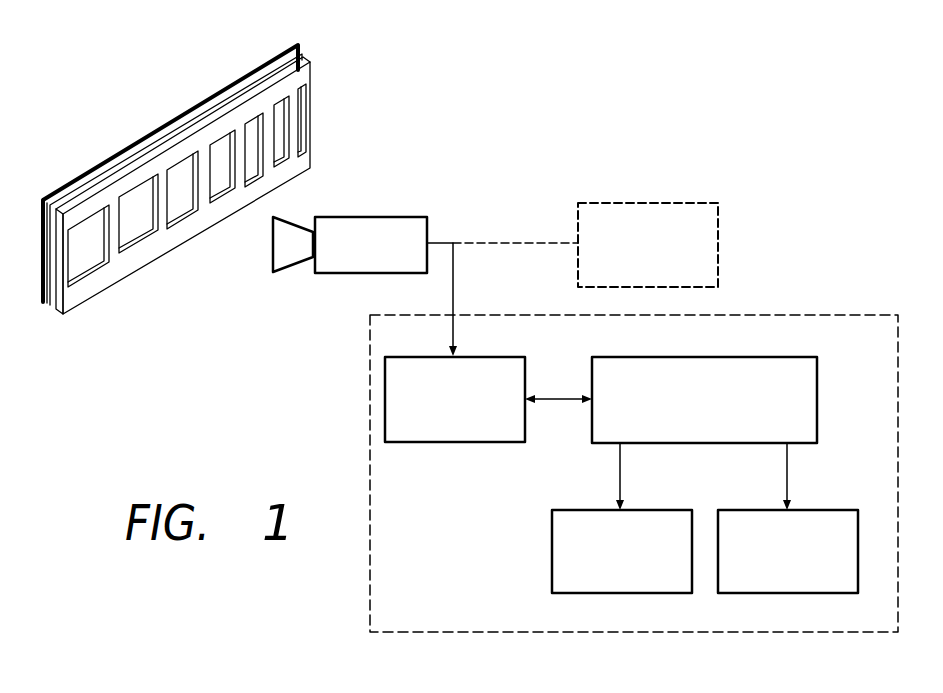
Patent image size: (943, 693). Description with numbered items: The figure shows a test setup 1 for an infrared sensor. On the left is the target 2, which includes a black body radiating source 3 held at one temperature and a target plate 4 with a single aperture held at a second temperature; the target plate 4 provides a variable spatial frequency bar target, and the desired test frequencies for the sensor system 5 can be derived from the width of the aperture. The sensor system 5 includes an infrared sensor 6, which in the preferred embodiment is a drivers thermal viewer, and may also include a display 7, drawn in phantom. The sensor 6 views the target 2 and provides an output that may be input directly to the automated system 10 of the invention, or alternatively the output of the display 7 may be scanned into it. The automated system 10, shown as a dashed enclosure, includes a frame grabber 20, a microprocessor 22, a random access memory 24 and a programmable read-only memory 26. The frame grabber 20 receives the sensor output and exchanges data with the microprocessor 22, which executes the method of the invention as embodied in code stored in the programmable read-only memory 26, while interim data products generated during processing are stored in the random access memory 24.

The test setup 1 is at (124, 93).
The target 2 is at (105, 149).
The black body radiating source 3 is at (46, 303).
The target plate 4 is at (115, 265).
The sensor system 5 is at (704, 162).
The infrared sensor 6 is at (375, 217).
The display 7 is at (640, 203).
The automated system 10 is at (777, 315).
The frame grabber 20 is at (453, 444).
The microprocessor 22 is at (818, 371).
The random access memory 24 is at (552, 570).
The programmable read-only memory 26 is at (828, 508).